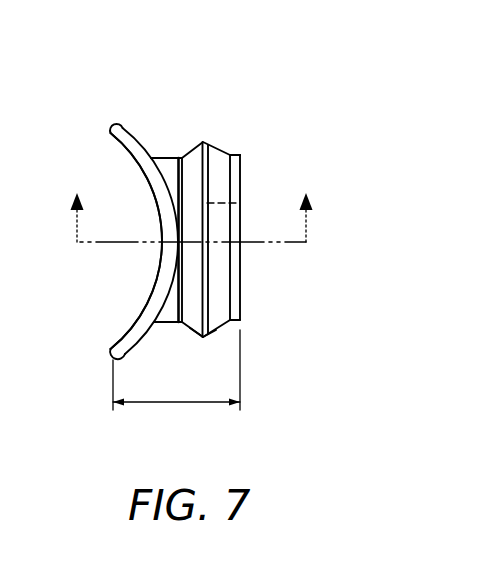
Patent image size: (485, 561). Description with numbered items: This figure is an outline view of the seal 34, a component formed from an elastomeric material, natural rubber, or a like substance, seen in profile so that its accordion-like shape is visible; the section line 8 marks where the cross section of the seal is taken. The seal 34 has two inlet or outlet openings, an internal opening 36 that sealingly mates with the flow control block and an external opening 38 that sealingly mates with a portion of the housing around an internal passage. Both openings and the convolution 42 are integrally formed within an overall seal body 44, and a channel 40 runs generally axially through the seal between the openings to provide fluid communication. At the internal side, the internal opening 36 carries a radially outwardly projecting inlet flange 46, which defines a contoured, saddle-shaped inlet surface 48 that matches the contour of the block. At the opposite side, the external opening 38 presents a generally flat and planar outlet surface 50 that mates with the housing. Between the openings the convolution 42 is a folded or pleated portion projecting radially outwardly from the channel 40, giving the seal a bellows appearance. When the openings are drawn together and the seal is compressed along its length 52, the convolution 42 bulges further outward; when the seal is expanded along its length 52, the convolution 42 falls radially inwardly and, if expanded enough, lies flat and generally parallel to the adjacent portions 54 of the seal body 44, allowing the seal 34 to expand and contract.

The section line 8- 8 is at (194, 201).
The seal 34 is at (223, 86).
The internal opening 36 is at (120, 216).
The external opening 38 is at (274, 216).
The channel 40 is at (240, 203).
The convolution 42 is at (205, 338).
The seal body 44 is at (115, 124).
The inlet flange 46 is at (128, 351).
The inlet surface 48 is at (127, 333).
The outlet surface 50 is at (242, 163).
The length 52 is at (172, 404).
The adjacent portions 54 is at (166, 157).